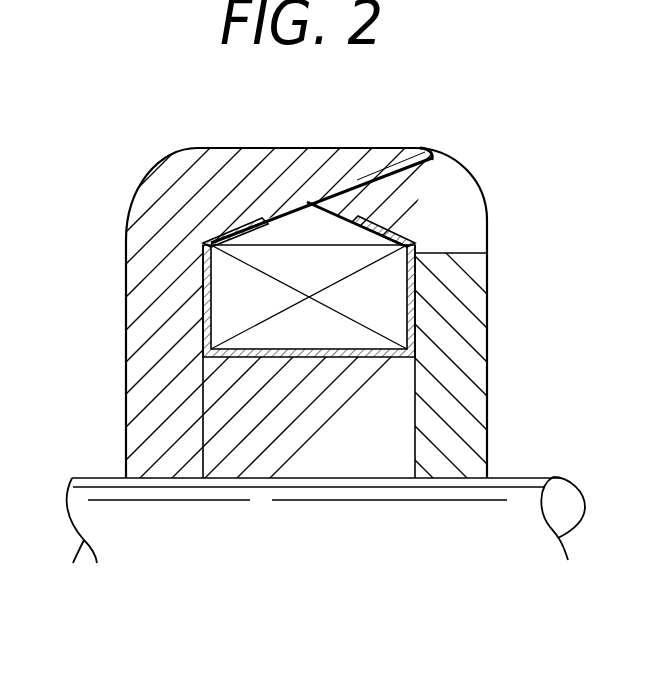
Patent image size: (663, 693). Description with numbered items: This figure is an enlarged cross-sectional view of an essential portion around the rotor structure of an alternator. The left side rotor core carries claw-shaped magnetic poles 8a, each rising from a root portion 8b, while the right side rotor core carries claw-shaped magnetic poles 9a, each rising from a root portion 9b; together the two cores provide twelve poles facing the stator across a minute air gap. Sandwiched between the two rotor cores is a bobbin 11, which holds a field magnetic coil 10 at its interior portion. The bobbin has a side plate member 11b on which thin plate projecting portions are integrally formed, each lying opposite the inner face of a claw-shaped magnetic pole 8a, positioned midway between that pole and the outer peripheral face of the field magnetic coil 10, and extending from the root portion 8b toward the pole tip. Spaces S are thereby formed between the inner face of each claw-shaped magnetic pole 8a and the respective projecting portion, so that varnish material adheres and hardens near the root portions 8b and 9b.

The claw-shaped magnetic pole 8a is at (312, 162).
The root portion 8b is at (212, 263).
The claw-shaped magnetic pole 9a is at (383, 197).
The root portion 9b is at (418, 268).
The field magnetic coil 10 is at (395, 302).
The bobbin 11 is at (412, 330).
The side plate member 11b is at (357, 216).
The space S is at (240, 228).